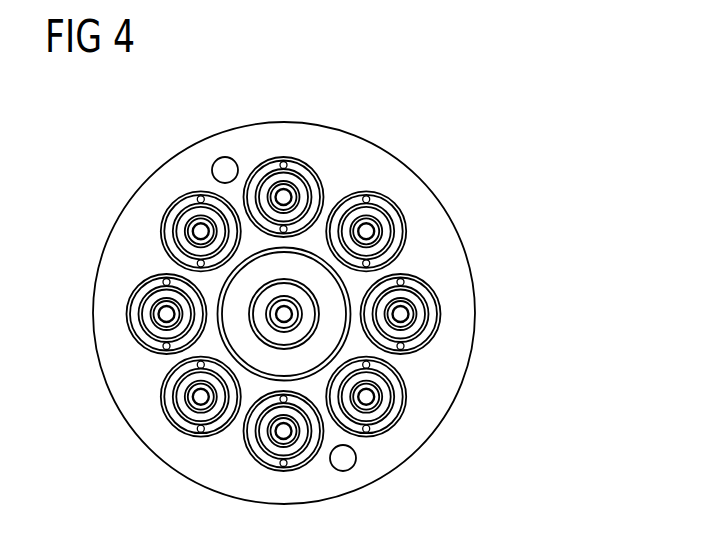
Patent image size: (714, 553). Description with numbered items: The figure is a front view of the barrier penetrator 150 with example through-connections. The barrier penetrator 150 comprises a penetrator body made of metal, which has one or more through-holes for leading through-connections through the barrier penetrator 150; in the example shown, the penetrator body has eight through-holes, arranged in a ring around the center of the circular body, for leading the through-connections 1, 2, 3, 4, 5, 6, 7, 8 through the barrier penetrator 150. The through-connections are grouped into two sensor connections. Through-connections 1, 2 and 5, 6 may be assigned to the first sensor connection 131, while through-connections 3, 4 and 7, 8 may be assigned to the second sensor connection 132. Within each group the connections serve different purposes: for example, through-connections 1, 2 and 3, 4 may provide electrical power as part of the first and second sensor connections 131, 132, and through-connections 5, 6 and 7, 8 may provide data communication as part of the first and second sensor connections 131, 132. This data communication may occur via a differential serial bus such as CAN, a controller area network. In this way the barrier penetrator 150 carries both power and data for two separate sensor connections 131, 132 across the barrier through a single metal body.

The barrier penetrator 150 is at (108, 145).
The first sensor connection 131 is at (395, 198).
The second sensor connection 132 is at (137, 287).
The through-connection 1 is at (284, 180).
The through-connection 2 is at (376, 231).
The through-connection 3 is at (413, 314).
The through-connection 4 is at (366, 410).
The through-connection 5 is at (284, 447).
The through-connection 6 is at (191, 398).
The through-connection 7 is at (156, 313).
The through-connection 8 is at (201, 220).